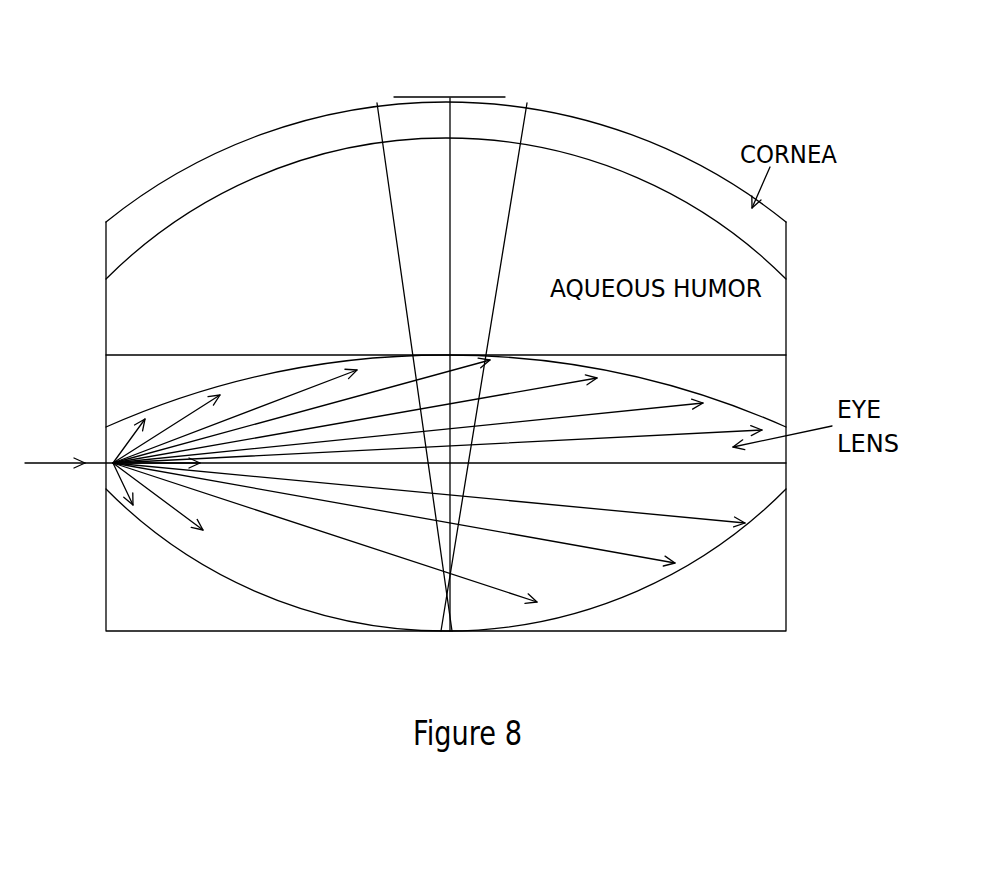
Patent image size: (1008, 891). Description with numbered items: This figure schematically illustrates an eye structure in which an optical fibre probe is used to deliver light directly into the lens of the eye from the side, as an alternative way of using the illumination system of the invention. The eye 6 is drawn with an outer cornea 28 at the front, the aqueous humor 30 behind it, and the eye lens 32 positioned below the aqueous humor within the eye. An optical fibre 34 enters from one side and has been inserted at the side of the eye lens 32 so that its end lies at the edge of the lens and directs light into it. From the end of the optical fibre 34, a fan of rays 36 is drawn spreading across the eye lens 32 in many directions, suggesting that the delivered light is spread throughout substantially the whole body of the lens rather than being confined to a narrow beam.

The eye 6 is at (786, 311).
The outer cornea 28 is at (687, 180).
The aqueous humor 30 is at (587, 200).
The eye lens 32 is at (248, 555).
The optical fibre 34 is at (52, 468).
The rays 36 is at (682, 518).